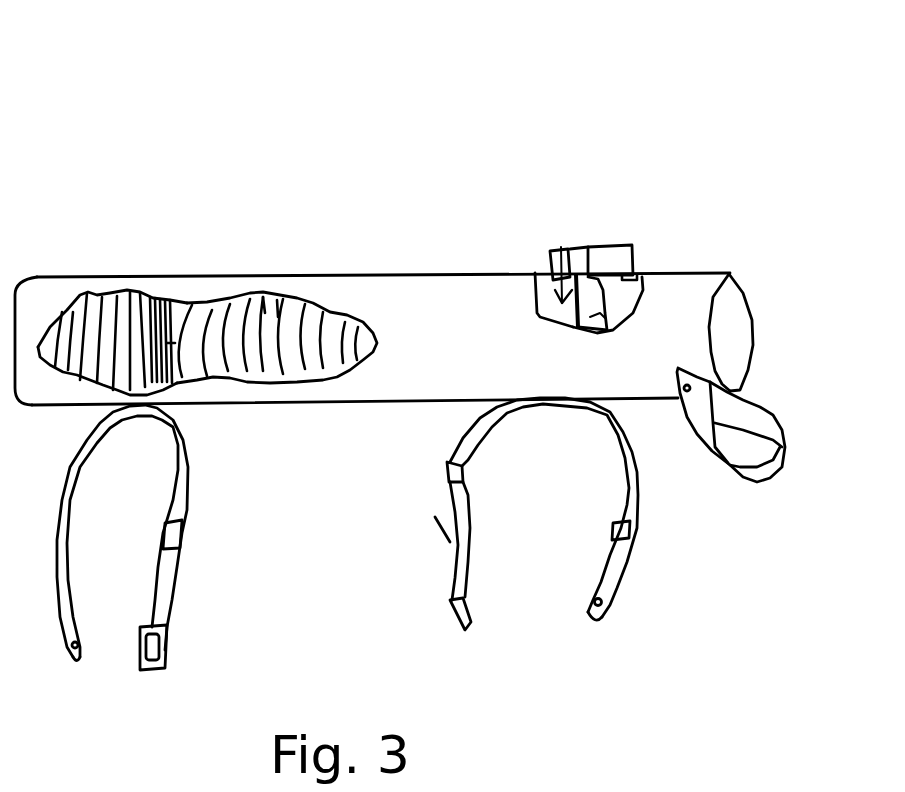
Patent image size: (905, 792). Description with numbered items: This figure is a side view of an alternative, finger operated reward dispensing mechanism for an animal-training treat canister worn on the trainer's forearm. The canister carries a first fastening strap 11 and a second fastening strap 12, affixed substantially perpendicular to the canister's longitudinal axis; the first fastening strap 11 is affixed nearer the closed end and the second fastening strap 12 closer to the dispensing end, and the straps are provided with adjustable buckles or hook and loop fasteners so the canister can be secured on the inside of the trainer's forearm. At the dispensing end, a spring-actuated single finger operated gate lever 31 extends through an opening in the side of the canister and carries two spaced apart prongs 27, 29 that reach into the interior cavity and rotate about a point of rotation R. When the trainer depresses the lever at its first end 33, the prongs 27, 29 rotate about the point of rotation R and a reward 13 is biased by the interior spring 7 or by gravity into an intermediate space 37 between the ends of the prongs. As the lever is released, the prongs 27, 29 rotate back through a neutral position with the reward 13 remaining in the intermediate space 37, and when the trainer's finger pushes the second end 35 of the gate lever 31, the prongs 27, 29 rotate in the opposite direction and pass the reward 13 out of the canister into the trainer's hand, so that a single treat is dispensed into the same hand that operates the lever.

The interior spring 7 is at (116, 294).
The reward 13 is at (204, 304).
The first fastening strap 11 is at (159, 537).
The second fastening strap 12 is at (495, 525).
The first prong 27 is at (535, 231).
The second end of gate lever 35 is at (550, 165).
The intermediate space 37 is at (627, 197).
The single finger operated gate lever 31 is at (597, 225).
The point of rotation R is at (679, 146).
The first end of gate lever 33 is at (739, 201).
The second prong 29 is at (671, 264).